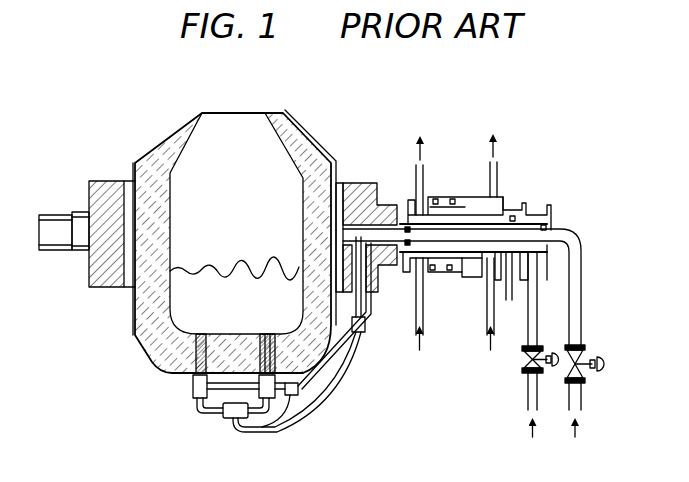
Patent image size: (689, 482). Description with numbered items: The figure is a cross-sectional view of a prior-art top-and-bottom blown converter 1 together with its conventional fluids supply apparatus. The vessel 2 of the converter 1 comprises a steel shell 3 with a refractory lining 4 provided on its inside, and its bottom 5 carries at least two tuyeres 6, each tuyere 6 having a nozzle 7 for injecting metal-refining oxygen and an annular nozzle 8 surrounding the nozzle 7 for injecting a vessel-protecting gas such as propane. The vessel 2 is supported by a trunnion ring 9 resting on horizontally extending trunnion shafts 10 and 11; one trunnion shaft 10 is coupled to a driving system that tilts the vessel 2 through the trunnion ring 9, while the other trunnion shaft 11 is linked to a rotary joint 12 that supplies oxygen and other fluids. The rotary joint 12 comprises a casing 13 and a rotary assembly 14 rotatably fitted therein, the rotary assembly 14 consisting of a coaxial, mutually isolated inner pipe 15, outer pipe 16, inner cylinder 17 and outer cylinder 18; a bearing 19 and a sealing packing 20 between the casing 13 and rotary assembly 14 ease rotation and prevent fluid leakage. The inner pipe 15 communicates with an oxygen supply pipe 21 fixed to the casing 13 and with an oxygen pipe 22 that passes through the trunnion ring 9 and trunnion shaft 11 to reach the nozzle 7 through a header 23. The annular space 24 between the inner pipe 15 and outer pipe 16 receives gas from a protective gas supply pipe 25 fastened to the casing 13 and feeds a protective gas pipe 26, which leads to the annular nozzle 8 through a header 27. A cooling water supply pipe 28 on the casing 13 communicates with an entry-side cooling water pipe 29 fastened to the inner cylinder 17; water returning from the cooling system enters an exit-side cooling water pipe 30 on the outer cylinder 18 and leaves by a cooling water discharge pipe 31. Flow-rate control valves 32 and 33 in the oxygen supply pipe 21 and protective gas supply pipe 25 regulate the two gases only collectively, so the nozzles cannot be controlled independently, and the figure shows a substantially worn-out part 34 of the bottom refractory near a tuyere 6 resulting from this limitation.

The top-and-bottom blown converter 1 is at (307, 122).
The vessel 2 is at (221, 197).
The steel shell 3 is at (318, 152).
The refractory lining 4 is at (268, 128).
The bottom 5 is at (238, 337).
The tuyere 6 is at (276, 333).
The nozzle 7 is at (267, 332).
The annular nozzle 8 is at (262, 333).
The trunnion ring 9 is at (110, 188).
The trunnion shaft 10 is at (57, 224).
The trunnion shaft 11 is at (385, 183).
The rotary joint 12 is at (447, 142).
The casing 13 is at (474, 187).
The rotary assembly 14 is at (431, 212).
The inner pipe 15 is at (501, 246).
The outer pipe 16 is at (477, 274).
The inner cylinder 17 is at (428, 258).
The outer cylinder 18 is at (447, 272).
The bearing 19 is at (455, 198).
The sealing packing 20 is at (498, 186).
The oxygen supply pipe 21 is at (583, 274).
The oxygen pipe 22 is at (386, 238).
The header 23 is at (228, 418).
The annular space 24 is at (505, 278).
The protective gas supply pipe 25 is at (529, 332).
The protective gas pipe 26 is at (369, 318).
The header 27 is at (290, 398).
The cooling water supply pipe 28 is at (487, 310).
The entry-side cooling water pipe 29 is at (414, 172).
The exit-side cooling water pipe 30 is at (410, 315).
The cooling water discharge pipe 31 is at (499, 168).
The flow-rate control valve 32 is at (603, 365).
The flow-rate control valve 33 is at (527, 375).
The worn-out part 34 is at (205, 332).